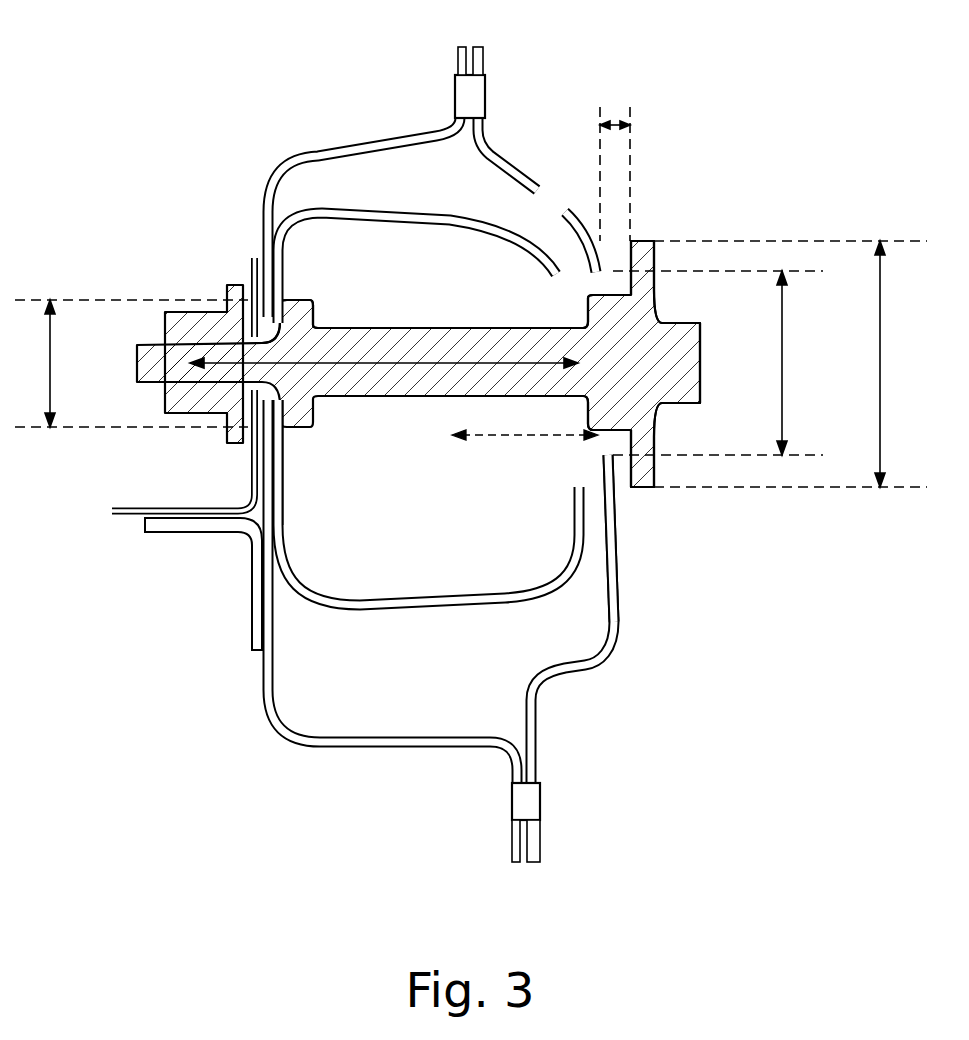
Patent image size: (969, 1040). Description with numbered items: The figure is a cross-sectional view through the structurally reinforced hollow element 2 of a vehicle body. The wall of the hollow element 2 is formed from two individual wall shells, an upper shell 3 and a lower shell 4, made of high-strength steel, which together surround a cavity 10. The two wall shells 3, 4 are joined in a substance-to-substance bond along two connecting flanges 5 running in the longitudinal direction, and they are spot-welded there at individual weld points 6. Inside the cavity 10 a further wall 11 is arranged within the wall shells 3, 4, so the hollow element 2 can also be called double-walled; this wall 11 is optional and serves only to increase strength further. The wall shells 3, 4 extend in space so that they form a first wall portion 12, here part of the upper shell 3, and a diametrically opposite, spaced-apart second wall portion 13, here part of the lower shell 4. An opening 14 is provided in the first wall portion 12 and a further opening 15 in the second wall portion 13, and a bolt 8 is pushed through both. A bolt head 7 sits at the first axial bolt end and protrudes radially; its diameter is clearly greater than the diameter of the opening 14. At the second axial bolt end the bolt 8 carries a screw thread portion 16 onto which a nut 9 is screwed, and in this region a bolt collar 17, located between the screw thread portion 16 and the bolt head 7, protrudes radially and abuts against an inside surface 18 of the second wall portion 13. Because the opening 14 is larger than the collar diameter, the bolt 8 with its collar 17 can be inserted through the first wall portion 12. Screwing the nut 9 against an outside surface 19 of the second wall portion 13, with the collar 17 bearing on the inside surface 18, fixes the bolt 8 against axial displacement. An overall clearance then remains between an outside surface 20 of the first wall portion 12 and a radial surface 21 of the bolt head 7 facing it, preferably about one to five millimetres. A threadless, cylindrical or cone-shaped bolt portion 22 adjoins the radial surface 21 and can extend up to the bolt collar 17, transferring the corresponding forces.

The structurally reinforced hollow element 2 is at (672, 654).
The upper shell 3 is at (582, 674).
The lower shell 4 is at (350, 746).
The connecting flange 5 is at (482, 62).
The weld point 6 is at (458, 88).
The bolt head 7 is at (672, 352).
The bolt 8 is at (412, 392).
The nut 9 is at (185, 325).
The cavity 10 is at (439, 425).
The further wall 11 is at (470, 222).
The first wall portion 12 is at (617, 505).
The second wall portion 13 is at (262, 228).
The opening 14 is at (604, 284).
The further opening 15 is at (256, 409).
The screw thread portion 16 is at (153, 170).
The bolt collar 17 is at (300, 312).
The inside surface 18 is at (285, 497).
The outside surface 19 is at (243, 664).
The outside surface 20 is at (622, 597).
The radial surface 21 is at (622, 437).
The bolt portion 22 is at (507, 435).